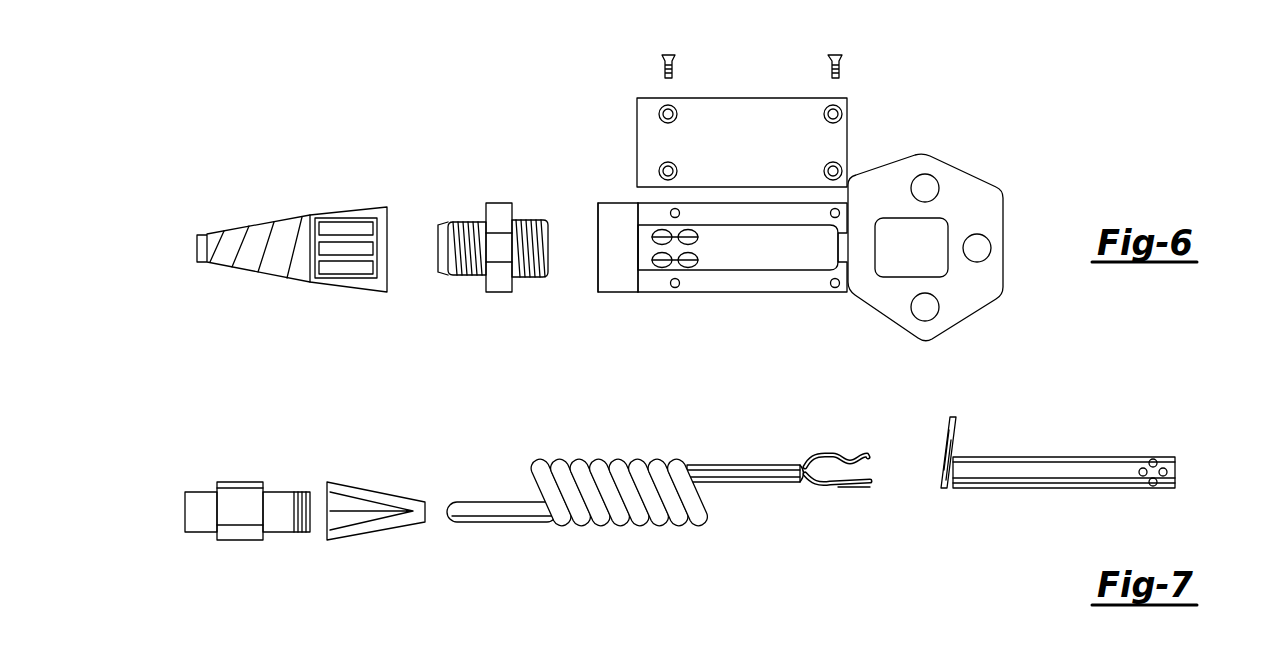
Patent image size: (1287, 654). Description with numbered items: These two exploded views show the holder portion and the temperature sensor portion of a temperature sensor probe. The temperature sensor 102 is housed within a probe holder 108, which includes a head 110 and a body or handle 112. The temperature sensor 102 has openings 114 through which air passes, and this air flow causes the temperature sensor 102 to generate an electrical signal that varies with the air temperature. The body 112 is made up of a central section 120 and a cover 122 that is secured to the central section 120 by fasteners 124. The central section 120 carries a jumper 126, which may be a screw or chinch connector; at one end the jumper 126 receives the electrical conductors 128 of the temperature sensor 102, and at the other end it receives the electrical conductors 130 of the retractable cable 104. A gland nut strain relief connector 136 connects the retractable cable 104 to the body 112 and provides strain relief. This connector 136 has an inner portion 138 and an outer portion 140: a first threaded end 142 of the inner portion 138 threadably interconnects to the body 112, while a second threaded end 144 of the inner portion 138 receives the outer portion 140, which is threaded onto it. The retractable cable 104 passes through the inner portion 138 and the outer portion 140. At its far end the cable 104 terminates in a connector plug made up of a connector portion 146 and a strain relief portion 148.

In FIG. 7, the temperature sensor 102 is at (988, 488).
In FIG. 7, the retractable cable 104 is at (657, 462).
In FIG. 6, the probe holder 108 is at (880, 119).
In FIG. 6, the head 110 is at (973, 177).
In FIG. 6, the body 112 is at (673, 292).
In FIG. 7, the openings 114 is at (1177, 478).
In FIG. 6, the central section 120 is at (787, 292).
In FIG. 6, the cover 122 is at (725, 98).
In FIG. 6, the fasteners 124 is at (662, 56).
In FIG. 6, the jumper 126 is at (655, 228).
In FIG. 7, the electrical conductors 128 is at (957, 443).
In FIG. 7, the electrical conductors 130 is at (830, 453).
In FIG. 6, the gland nut strain relief connector 136 is at (405, 181).
In FIG. 6, the inner portion 138 is at (495, 283).
In FIG. 6, the outer portion 140 is at (323, 287).
In FIG. 6, the first threaded end 142 is at (533, 278).
In FIG. 6, the second threaded end 144 is at (465, 222).
In FIG. 7, the connector portion 146 is at (185, 507).
In FIG. 7, the strain relief portion 148 is at (383, 492).